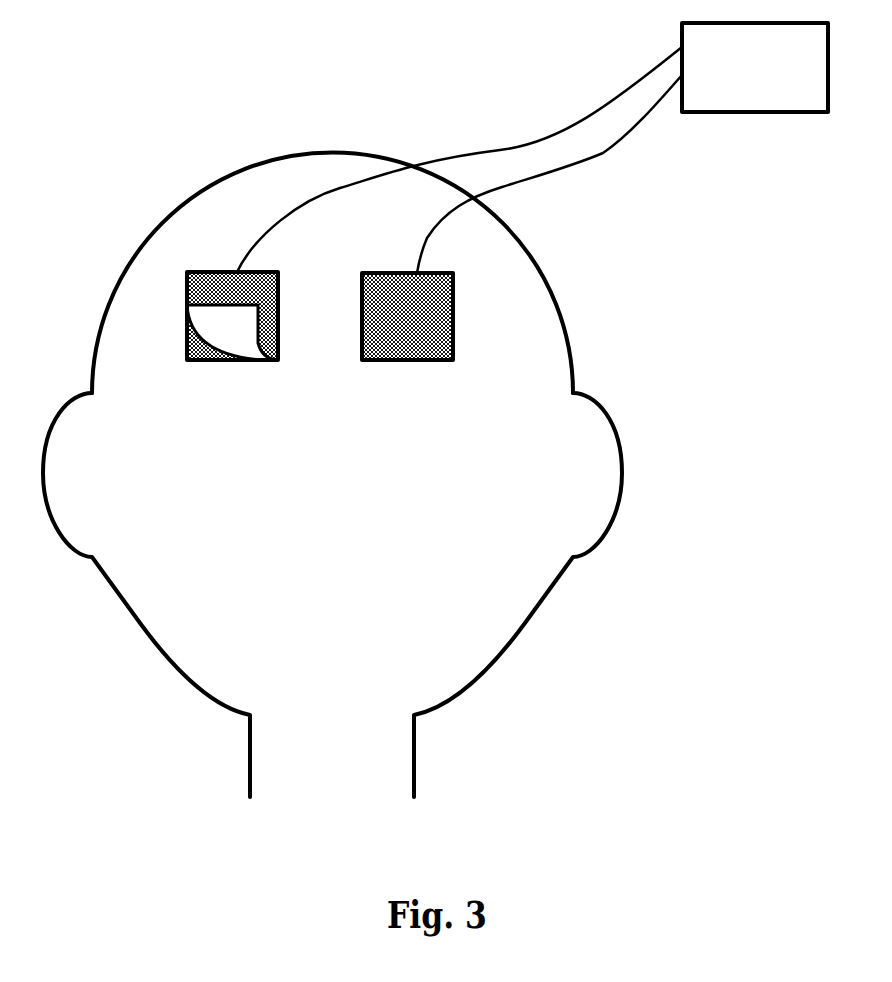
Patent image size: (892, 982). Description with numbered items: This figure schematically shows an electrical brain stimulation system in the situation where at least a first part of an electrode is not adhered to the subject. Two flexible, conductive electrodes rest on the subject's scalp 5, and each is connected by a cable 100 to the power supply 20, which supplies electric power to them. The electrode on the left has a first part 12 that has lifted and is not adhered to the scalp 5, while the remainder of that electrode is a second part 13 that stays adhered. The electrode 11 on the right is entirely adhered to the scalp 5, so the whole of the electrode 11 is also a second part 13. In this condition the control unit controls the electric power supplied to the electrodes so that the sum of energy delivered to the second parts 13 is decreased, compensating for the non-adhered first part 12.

The scalp 5 is at (518, 342).
The electrode 11 is at (420, 363).
The first part 12 is at (232, 328).
The second part 13 is at (260, 292).
The power supply 20 is at (800, 112).
The cable 100 is at (603, 153).